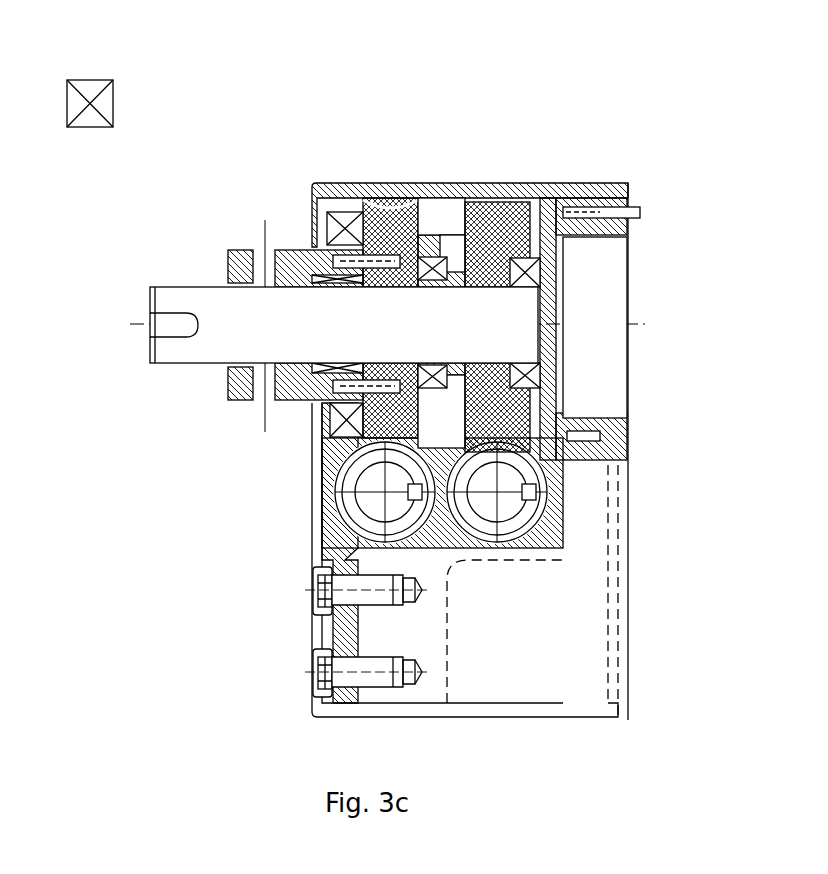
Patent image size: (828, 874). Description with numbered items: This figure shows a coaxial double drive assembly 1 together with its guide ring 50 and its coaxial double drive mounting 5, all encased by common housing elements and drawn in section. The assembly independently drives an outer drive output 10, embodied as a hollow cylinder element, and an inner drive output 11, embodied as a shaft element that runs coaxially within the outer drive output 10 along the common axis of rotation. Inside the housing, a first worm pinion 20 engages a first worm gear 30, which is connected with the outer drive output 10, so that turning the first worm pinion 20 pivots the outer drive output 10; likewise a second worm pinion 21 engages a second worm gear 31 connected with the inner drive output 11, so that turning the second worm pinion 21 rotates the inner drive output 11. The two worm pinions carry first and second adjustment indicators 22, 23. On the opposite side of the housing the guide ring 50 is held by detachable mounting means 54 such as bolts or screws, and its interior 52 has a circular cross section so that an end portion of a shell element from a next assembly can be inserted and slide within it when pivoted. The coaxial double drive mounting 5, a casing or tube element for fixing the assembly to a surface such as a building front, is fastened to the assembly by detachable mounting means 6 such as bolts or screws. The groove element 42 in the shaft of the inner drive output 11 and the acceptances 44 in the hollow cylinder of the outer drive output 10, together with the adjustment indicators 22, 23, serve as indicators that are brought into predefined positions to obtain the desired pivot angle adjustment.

The coaxial double drive assembly 1 is at (369, 390).
The coaxial double drive mounting 5 is at (470, 475).
The detachable mounting means 6 is at (312, 594).
The outer drive output 10 is at (290, 260).
The inner drive output 11 is at (316, 359).
The first worm pinion 20 is at (353, 502).
The second worm pinion 21 is at (558, 527).
The first adjustment indicator 22 is at (413, 505).
The second adjustment indicator 23 is at (530, 505).
The first worm gear 30 is at (378, 202).
The second worm gear 31 is at (500, 204).
The groove element 42 is at (152, 324).
The acceptances 44 is at (248, 256).
The guide ring 50 is at (599, 474).
The interior 52 is at (595, 327).
The detachable mounting means 54 is at (634, 212).